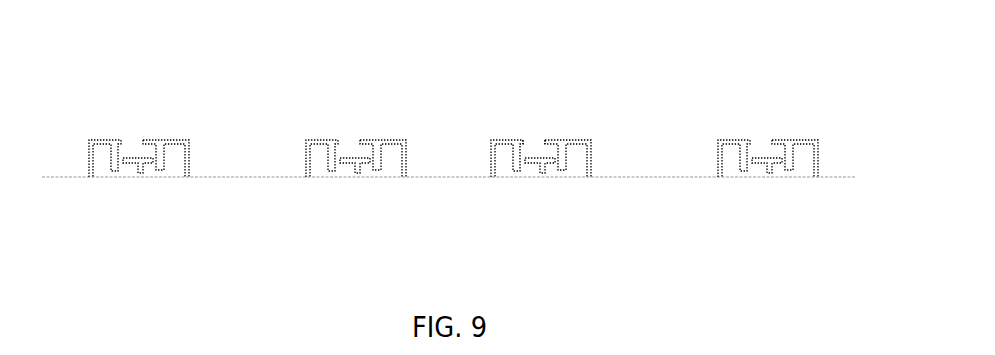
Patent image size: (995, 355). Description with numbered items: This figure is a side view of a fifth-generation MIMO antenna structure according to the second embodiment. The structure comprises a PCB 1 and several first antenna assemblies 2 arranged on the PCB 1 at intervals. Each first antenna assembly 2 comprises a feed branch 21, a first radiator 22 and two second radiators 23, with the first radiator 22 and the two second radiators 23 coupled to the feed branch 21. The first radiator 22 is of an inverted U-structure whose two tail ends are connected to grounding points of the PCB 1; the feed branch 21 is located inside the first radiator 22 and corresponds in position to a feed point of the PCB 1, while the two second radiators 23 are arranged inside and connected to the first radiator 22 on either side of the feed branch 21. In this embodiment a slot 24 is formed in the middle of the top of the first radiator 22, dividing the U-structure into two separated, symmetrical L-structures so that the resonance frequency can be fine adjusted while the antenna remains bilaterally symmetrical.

The PCB 1 is at (242, 177).
The first antenna assembly 2 is at (439, 145).
The feed branch 21 is at (507, 213).
The first radiator 22 is at (566, 100).
The second radiator 23 is at (595, 204).
The slot 24 is at (510, 83).